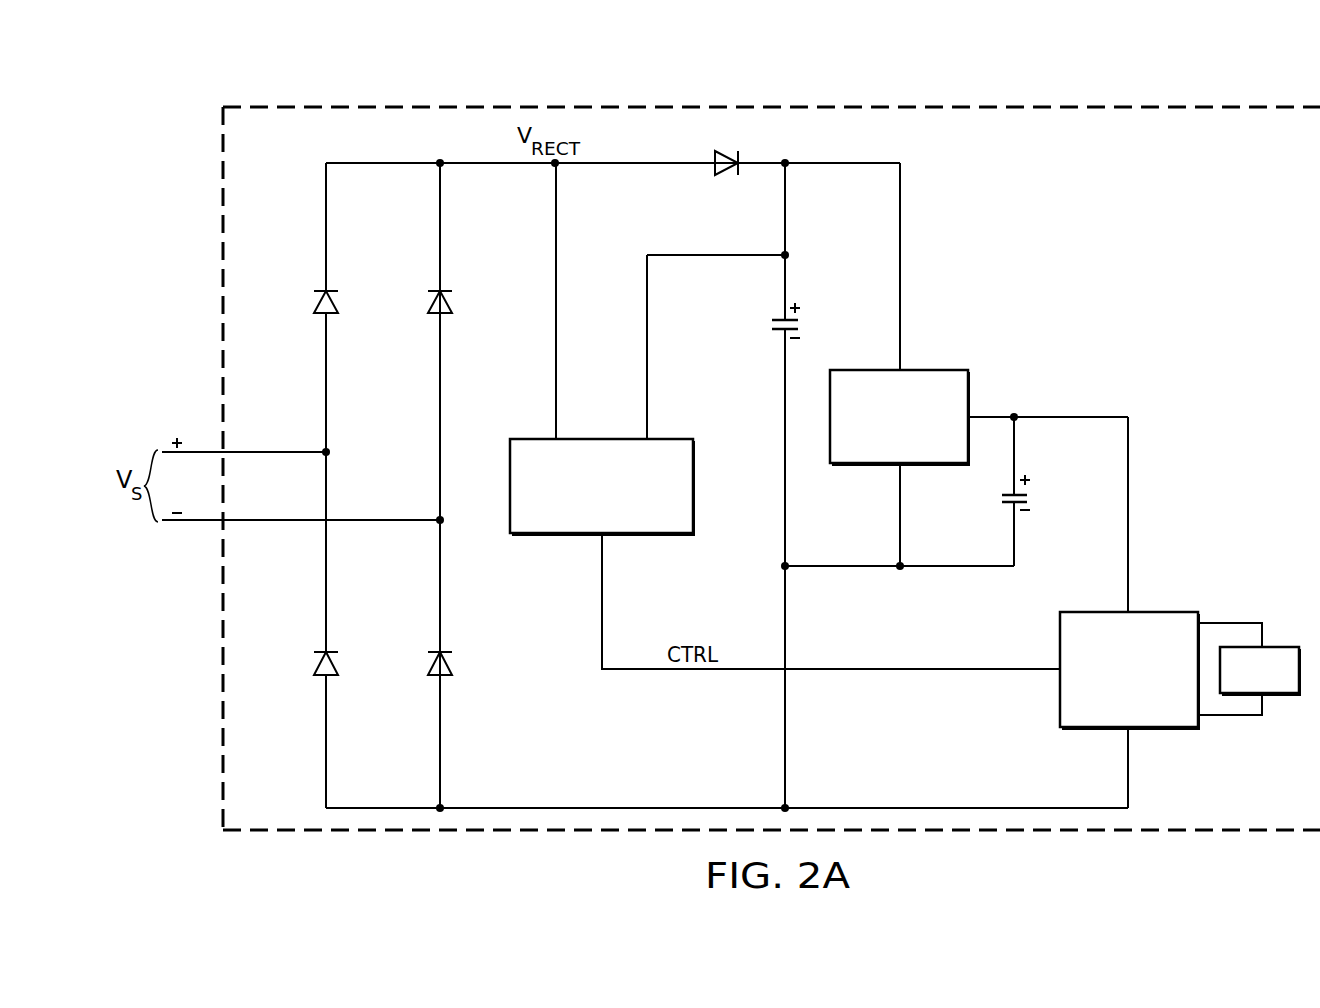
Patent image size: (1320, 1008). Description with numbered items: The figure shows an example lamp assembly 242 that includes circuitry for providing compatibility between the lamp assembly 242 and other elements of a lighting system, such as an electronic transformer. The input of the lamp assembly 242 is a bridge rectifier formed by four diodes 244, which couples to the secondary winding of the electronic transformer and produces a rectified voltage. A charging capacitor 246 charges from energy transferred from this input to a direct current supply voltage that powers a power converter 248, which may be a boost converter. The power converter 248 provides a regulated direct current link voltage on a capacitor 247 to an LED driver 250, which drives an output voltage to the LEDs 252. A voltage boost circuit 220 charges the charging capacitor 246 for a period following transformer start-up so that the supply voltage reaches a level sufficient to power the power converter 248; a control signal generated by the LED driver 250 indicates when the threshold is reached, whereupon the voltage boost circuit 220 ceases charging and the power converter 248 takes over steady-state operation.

The lamp assembly 242 is at (961, 107).
The diodes 244 is at (428, 664).
The charging capacitor 246 is at (772, 325).
The capacitor 247 is at (1001, 497).
The power converter 248 is at (933, 370).
The voltage boost circuit 220 is at (567, 535).
The LED driver 250 is at (1163, 728).
The light-emitting diodes (LEDs) 252 is at (1278, 695).